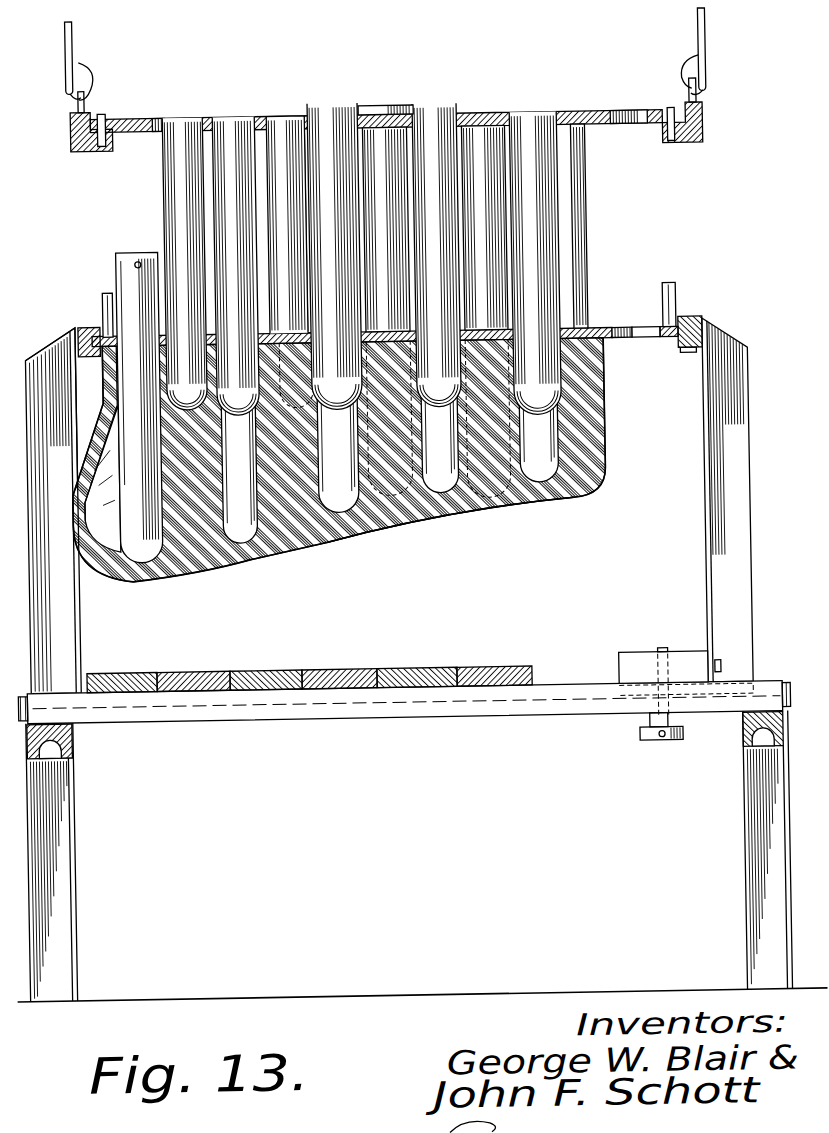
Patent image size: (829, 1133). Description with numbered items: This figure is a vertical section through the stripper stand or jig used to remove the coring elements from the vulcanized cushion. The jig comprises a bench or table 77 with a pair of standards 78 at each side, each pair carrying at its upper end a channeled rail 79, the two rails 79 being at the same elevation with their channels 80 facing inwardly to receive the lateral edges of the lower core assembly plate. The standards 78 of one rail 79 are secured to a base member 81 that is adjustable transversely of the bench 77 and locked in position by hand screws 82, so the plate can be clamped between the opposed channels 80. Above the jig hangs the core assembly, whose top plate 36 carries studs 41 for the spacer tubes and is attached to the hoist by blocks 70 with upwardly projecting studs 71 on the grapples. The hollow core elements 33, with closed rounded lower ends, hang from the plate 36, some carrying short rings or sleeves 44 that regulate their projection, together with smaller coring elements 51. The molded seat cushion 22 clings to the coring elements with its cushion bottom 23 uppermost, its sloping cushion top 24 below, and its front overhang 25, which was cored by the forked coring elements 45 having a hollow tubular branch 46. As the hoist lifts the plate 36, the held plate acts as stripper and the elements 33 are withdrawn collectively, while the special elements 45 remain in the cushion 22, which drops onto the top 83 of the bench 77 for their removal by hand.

The seat cushion 22 is at (270, 553).
The cushion bottom 23 is at (598, 331).
The cushion top 24 is at (328, 545).
The overhang 25 is at (77, 480).
The core elements 33 is at (235, 177).
The top plate 36 is at (605, 114).
The studs 41 is at (108, 298).
The rings or short sleeves 44 is at (466, 105).
The forked coring elements 45 is at (140, 270).
The hollow tubular branch 46 is at (103, 494).
The coring elements of smaller size 51 is at (585, 217).
The blocks 70 is at (78, 130).
The studs 71 is at (113, 112).
The bench or table 77 is at (410, 715).
The standards 78 is at (64, 630).
The channeled rail 79 is at (696, 324).
The channels 80 is at (690, 352).
The base member 81 is at (633, 660).
The hand screws 82 is at (636, 739).
The top of the bench or table 83 is at (405, 670).